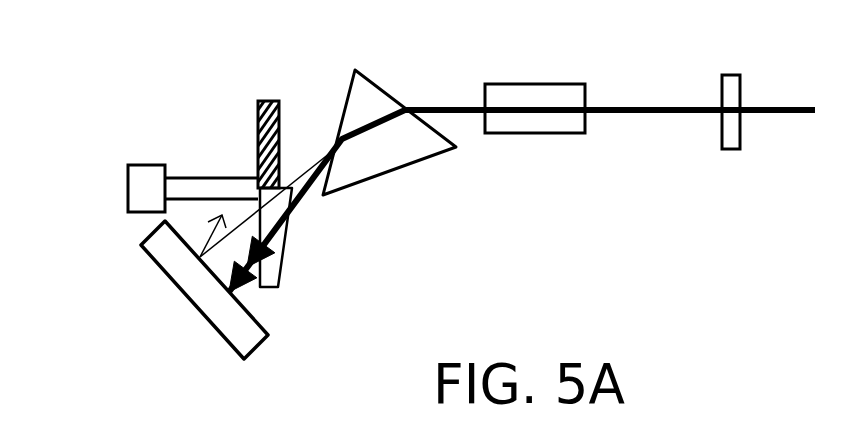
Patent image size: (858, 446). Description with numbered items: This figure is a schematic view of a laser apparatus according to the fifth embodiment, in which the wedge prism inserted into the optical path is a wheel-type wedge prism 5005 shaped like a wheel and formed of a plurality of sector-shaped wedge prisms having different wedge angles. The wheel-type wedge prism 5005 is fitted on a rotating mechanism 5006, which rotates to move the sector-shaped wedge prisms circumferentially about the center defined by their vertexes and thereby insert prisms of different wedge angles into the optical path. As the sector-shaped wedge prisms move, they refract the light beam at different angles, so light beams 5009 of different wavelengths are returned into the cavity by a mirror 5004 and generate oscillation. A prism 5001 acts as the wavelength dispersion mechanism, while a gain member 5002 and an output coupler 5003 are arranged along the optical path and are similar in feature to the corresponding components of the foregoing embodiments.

The prism 5001 is at (357, 165).
The gain member 5002 is at (522, 123).
The output coupler 5003 is at (717, 130).
The mirror 5004 is at (232, 336).
The wheel-type wedge prism 5005 is at (280, 122).
The rotating mechanism 5006 is at (153, 183).
The light beams 5009 is at (253, 290).